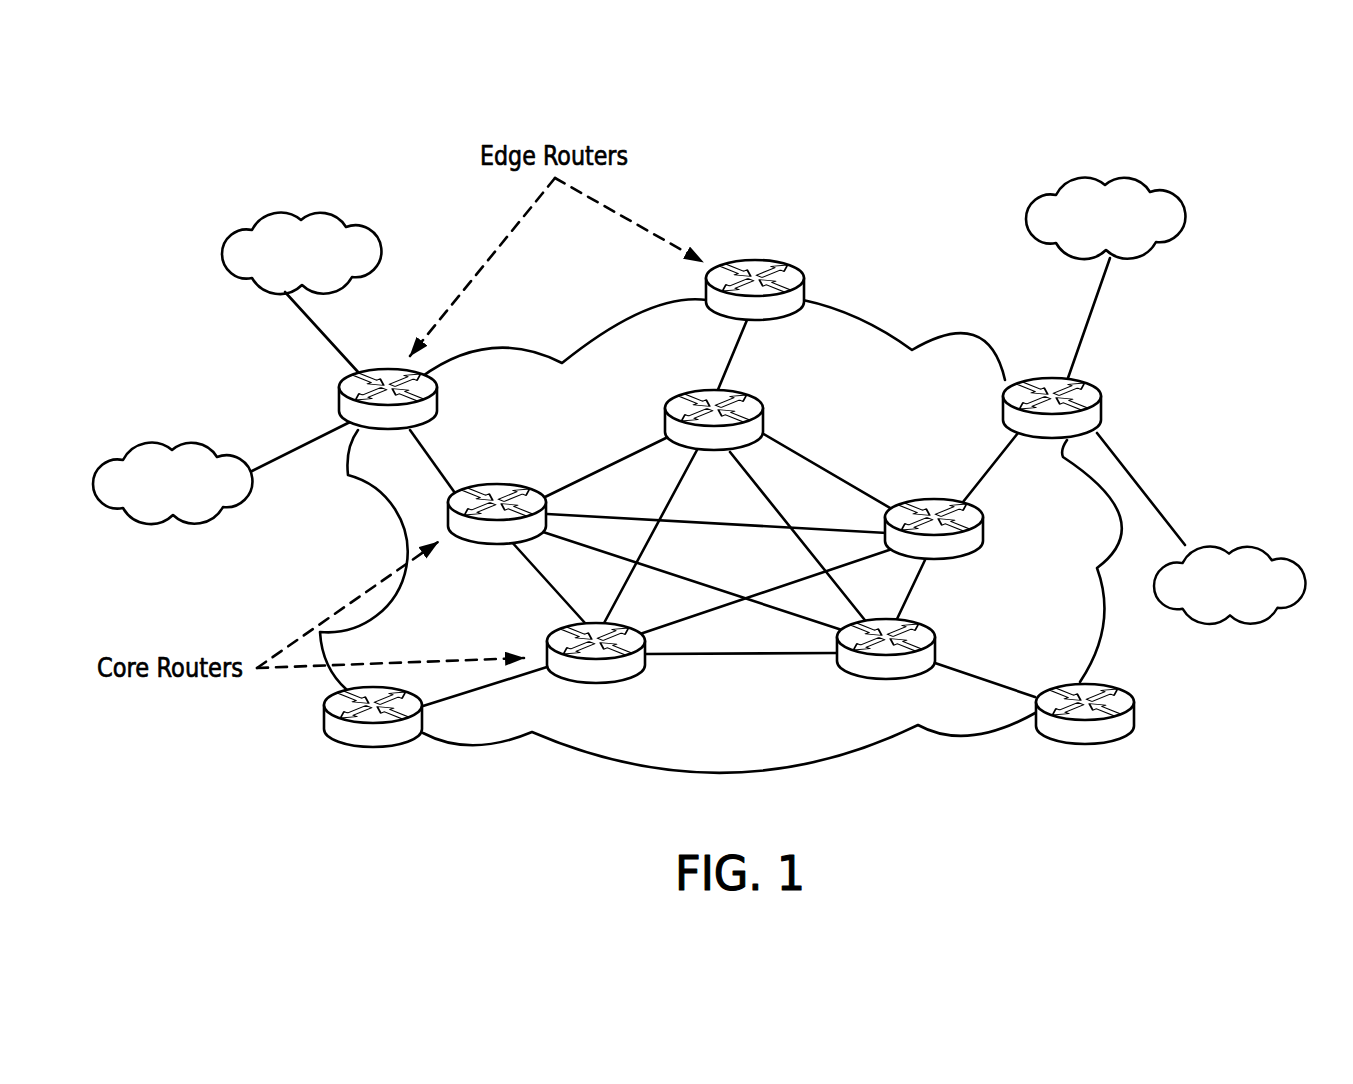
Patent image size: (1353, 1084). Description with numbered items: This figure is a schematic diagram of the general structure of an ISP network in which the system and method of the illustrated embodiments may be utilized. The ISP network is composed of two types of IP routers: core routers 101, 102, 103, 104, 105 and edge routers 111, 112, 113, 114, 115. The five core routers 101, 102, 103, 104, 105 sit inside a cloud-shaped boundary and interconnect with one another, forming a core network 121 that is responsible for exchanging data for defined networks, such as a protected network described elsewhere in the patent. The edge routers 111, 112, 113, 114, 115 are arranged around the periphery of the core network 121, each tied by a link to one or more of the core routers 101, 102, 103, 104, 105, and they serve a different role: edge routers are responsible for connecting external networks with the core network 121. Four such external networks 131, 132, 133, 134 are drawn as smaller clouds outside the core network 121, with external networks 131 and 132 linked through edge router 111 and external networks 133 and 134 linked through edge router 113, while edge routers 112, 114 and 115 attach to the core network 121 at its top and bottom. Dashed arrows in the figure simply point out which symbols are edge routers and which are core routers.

The core router 101 is at (497, 483).
The core router 102 is at (763, 405).
The core router 103 is at (932, 500).
The core router 104 is at (937, 645).
The core router 105 is at (578, 683).
The edge router 111 is at (340, 402).
The edge router 112 is at (747, 260).
The edge router 113 is at (1102, 412).
The edge router 114 is at (1088, 744).
The edge router 115 is at (367, 747).
The core network 121 is at (867, 727).
The external network 131 is at (139, 522).
The external network 132 is at (223, 252).
The external network 133 is at (1168, 191).
The external network 134 is at (1248, 623).